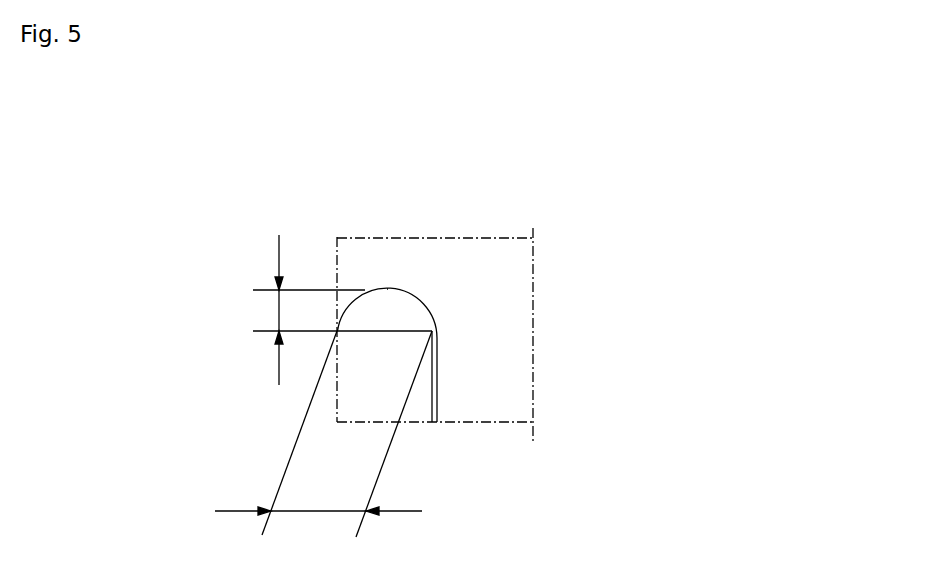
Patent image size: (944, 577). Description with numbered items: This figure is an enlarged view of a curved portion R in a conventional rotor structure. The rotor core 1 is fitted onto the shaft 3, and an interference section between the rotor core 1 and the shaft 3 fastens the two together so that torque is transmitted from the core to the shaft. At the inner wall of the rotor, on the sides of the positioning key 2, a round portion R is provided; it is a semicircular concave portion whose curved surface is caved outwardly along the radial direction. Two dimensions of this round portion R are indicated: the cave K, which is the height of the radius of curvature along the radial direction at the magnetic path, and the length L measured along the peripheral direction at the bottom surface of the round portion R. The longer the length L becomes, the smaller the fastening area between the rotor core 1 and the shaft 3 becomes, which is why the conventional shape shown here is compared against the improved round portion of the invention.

The rotor core 1 is at (513, 310).
The positioning key 2 is at (502, 378).
The shaft 3 is at (411, 414).
The round portion R is at (415, 298).
The cave K is at (299, 310).
The length along peripheral direction L is at (318, 529).